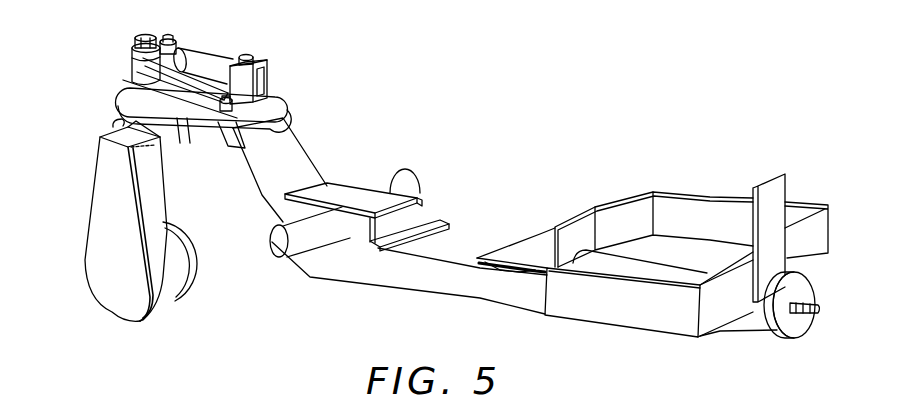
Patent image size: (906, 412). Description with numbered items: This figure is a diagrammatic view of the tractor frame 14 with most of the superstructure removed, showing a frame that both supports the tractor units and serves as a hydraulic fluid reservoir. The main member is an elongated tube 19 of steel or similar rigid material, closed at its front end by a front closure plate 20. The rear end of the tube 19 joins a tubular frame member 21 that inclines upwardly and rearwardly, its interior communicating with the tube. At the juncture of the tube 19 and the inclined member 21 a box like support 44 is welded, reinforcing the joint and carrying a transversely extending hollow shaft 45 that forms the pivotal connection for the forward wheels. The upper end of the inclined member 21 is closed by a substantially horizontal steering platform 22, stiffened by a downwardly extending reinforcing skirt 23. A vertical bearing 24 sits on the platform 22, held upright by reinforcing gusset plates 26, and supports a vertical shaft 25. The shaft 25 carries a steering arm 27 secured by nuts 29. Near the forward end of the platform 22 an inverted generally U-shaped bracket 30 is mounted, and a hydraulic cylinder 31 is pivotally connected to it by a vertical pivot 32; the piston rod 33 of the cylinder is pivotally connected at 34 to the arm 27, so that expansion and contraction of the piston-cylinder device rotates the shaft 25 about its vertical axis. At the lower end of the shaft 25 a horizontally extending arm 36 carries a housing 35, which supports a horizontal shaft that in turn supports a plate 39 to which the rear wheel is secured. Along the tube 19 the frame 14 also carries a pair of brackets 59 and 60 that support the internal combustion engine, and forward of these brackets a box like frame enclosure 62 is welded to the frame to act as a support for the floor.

The frame 14 is at (413, 291).
The elongated tube 19 is at (453, 268).
The front closure plate 20 is at (788, 322).
The tubular frame member 21 is at (290, 157).
The steering platform 22 is at (262, 115).
The reinforcing skirt 23 is at (219, 130).
The vertical bearing 24 is at (150, 75).
The vertical shaft 25 is at (125, 122).
The reinforcing gusset plates 26 is at (178, 125).
The steering arm 27 is at (130, 54).
The nuts 29 is at (140, 42).
The inverted generally U-shaped bracket 30 is at (258, 85).
The hydraulic cylinder 31 is at (249, 56).
The vertical pivot 32 is at (258, 64).
The piston rod 33 is at (178, 48).
The pivotal connection 34 is at (124, 104).
The housing 35 is at (103, 221).
The horizontally extending arm 36 is at (128, 130).
The plate 39 is at (184, 256).
The box like support 44 is at (347, 187).
The hollow shaft 45 is at (400, 185).
The bracket 59 is at (437, 200).
The bracket 60 is at (532, 233).
The box like frame enclosure 62 is at (690, 218).